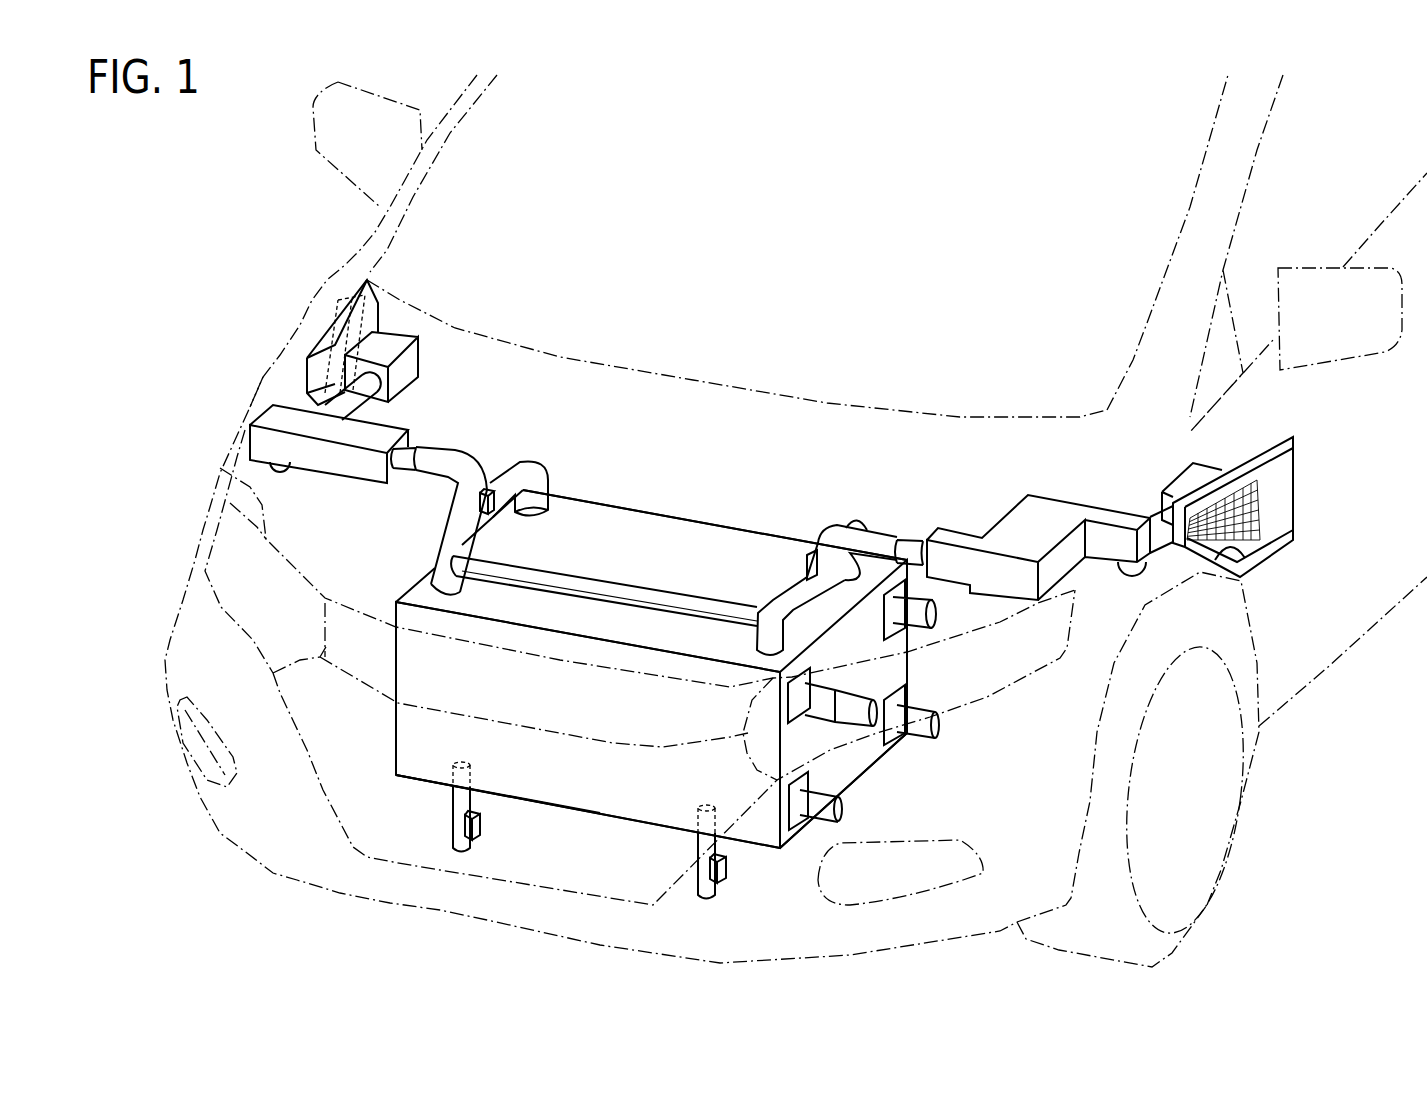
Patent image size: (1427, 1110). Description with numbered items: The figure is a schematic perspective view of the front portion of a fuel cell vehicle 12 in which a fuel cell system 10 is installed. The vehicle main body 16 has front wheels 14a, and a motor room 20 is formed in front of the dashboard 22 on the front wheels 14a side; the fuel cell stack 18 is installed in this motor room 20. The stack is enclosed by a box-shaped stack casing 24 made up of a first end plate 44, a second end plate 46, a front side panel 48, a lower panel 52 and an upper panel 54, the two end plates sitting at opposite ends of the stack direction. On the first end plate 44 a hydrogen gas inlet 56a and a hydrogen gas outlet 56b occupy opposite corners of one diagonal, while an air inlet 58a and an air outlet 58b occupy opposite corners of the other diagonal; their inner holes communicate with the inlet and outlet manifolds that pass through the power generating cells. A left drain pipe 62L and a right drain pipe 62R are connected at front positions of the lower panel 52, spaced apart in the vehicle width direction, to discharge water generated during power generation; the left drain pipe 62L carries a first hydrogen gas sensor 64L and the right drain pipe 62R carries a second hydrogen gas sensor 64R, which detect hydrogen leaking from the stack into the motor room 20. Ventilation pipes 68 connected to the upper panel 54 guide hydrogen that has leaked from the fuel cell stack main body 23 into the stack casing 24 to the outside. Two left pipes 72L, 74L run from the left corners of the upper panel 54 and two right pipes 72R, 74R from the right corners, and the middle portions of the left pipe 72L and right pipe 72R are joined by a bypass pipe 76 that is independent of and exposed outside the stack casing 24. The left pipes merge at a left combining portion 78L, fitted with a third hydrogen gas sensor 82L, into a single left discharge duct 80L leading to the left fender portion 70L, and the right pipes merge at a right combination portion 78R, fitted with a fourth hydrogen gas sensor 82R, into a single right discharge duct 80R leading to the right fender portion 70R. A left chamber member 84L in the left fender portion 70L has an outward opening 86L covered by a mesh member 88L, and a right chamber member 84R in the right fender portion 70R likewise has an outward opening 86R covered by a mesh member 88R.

The fuel cell system 10 is at (655, 467).
The fuel cell vehicle 12 is at (234, 209).
The front wheels 14a is at (1210, 901).
The vehicle main body 16 is at (262, 376).
The fuel cell stack 18 is at (575, 827).
The motor room 20 is at (220, 468).
The dashboard 22 is at (632, 380).
The fuel cell stack main body 23 is at (603, 795).
The stack casing 24 is at (397, 775).
The first end plate 44 is at (843, 773).
The second end plate 46 is at (394, 723).
The front side panel 48 is at (665, 815).
The lower panel 52 is at (500, 798).
The upper panel 54 is at (682, 523).
The hydrogen gas inlet 56a is at (808, 697).
The hydrogen gas outlet 56b is at (917, 708).
The air inlet 58a is at (937, 613).
The air outlet 58b is at (825, 813).
The right drain pipe 62R is at (458, 840).
The left drain pipe 62L is at (705, 893).
The second hydrogen gas sensor 64R is at (477, 833).
The first hydrogen gas sensor 64L is at (725, 883).
The ventilation pipes 68 is at (997, 479).
The right fender portion 70R is at (298, 393).
The left fender portion 70L is at (1252, 581).
The right pipe 72R is at (443, 543).
The left pipe 72L is at (788, 590).
The right pipe 74R is at (530, 470).
The left pipe 74L is at (863, 517).
The bypass pipe 76 is at (627, 587).
The right combination portion 78R is at (463, 487).
The left combining portion 78L is at (837, 562).
The right discharge duct 80R is at (320, 460).
The left discharge duct 80L is at (1058, 505).
The fourth hydrogen gas sensor 82R is at (495, 507).
The third hydrogen gas sensor 82L is at (807, 560).
The right chamber member 84R is at (409, 321).
The left chamber member 84L is at (1185, 456).
The outward opening 86R is at (360, 310).
The outward opening 86L is at (1233, 542).
The mesh member 88R is at (340, 338).
The mesh member 88L is at (1250, 523).